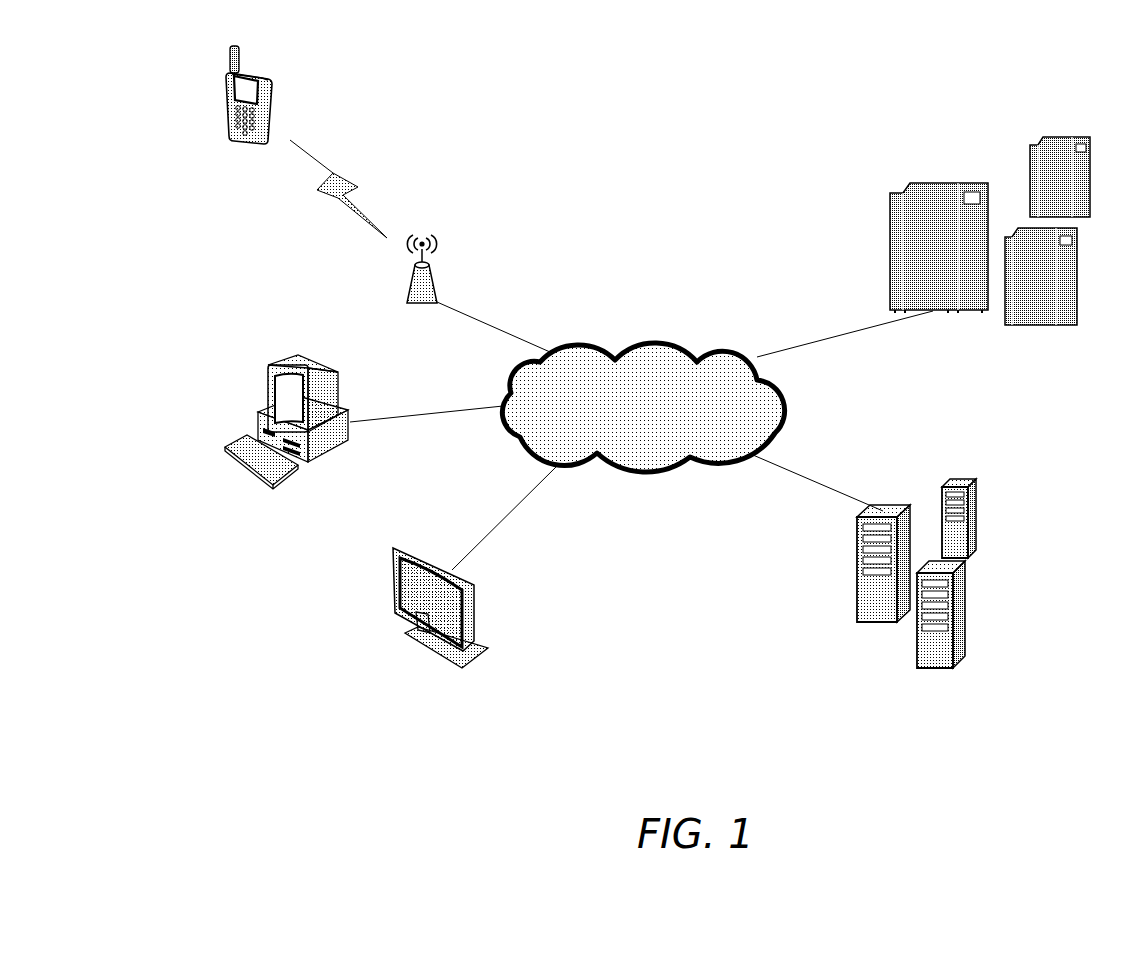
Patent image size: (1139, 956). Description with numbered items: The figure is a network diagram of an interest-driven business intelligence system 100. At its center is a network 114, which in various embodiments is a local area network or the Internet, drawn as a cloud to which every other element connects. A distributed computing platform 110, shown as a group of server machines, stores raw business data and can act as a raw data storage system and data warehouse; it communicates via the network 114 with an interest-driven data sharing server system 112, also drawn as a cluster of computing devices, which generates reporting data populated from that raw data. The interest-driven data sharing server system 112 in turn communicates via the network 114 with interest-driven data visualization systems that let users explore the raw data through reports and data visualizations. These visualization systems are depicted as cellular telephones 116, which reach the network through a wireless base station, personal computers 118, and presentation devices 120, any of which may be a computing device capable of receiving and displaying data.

The interest-driven business intelligence system 100 is at (713, 118).
The distributed computing platform 110 is at (940, 182).
The interest-driven data sharing server system 112 is at (980, 514).
The network 114 is at (655, 343).
The cellular telephones 116 is at (273, 78).
The personal computers 118 is at (290, 373).
The presentation devices 120 is at (403, 548).